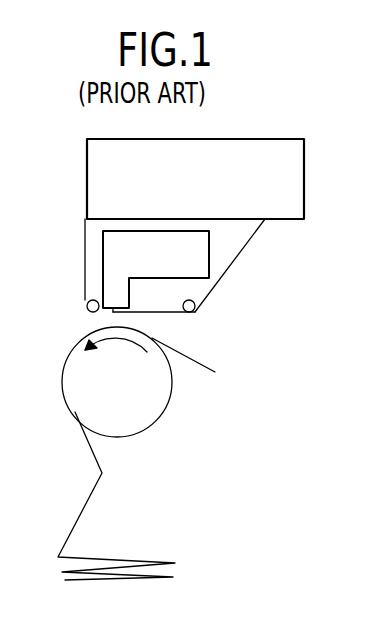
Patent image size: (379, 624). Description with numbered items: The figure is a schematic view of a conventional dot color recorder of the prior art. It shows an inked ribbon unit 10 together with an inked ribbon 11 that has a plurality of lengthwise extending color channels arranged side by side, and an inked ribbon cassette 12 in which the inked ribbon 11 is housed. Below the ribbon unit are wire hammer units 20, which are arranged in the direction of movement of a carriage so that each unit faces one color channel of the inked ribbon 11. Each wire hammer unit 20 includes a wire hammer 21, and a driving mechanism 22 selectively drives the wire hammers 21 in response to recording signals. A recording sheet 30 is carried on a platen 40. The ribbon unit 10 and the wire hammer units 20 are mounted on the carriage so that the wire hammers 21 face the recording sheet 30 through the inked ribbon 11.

The inked ribbon unit 10 is at (338, 183).
The inked ribbon 11 is at (167, 313).
The inked ribbon cassette 12 is at (283, 212).
The wire hammer units 20 is at (166, 271).
The wire hammer 21 is at (112, 312).
The driving mechanism 22 is at (203, 263).
The recording sheet 30 is at (92, 502).
The platen 40 is at (157, 415).